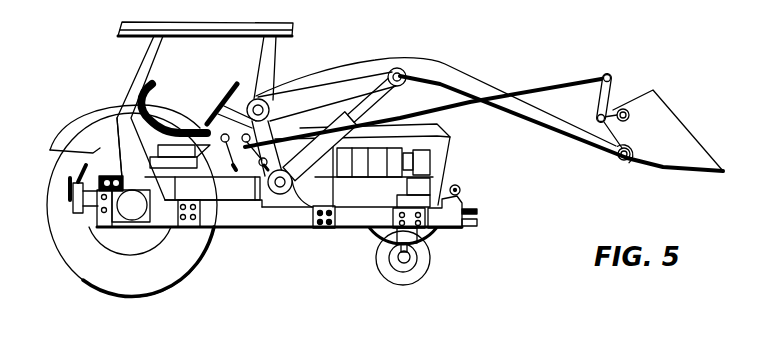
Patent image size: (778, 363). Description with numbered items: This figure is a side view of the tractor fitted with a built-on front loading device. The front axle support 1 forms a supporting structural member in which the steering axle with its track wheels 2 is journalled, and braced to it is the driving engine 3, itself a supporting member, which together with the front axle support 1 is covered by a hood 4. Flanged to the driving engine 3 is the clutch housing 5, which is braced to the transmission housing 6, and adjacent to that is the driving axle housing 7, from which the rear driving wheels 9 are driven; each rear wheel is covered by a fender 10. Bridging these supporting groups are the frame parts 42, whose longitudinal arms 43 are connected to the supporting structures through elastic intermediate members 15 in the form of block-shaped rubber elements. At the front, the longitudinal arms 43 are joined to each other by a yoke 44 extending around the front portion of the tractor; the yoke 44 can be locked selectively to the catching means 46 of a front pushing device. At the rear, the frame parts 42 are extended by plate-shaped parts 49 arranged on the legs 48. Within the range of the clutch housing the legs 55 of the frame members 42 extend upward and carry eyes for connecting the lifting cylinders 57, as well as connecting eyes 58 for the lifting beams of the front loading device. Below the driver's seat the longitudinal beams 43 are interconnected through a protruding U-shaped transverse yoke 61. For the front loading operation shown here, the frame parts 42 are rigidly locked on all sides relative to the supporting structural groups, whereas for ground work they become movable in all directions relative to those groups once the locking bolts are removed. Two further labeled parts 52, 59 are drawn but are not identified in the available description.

The front axle support 1 is at (430, 234).
The track wheels 2 is at (420, 292).
The driving engine 3 is at (358, 199).
The hood 4 is at (445, 128).
The clutch housing 5 is at (310, 233).
The transmission housing 6 is at (222, 193).
The driving axle housing 7 is at (112, 223).
The rear driving wheels 9 is at (89, 268).
The fender 10 is at (62, 143).
The elastic intermediate members 15 is at (188, 227).
The frame parts 42 is at (280, 215).
The longitudinal arms 43 is at (252, 214).
The yoke 44 is at (465, 199).
The catching means 46 is at (478, 209).
The legs 48 is at (137, 80).
The plate-shaped parts 49 is at (110, 160).
The cab mounting plate 52 is at (107, 167).
The legs 55 is at (263, 68).
The lifting cylinders 57 is at (343, 118).
The connecting eyes 58 is at (498, 79).
The lift arm 59 is at (361, 70).
The U-shaped transverse yoke 61 is at (173, 160).